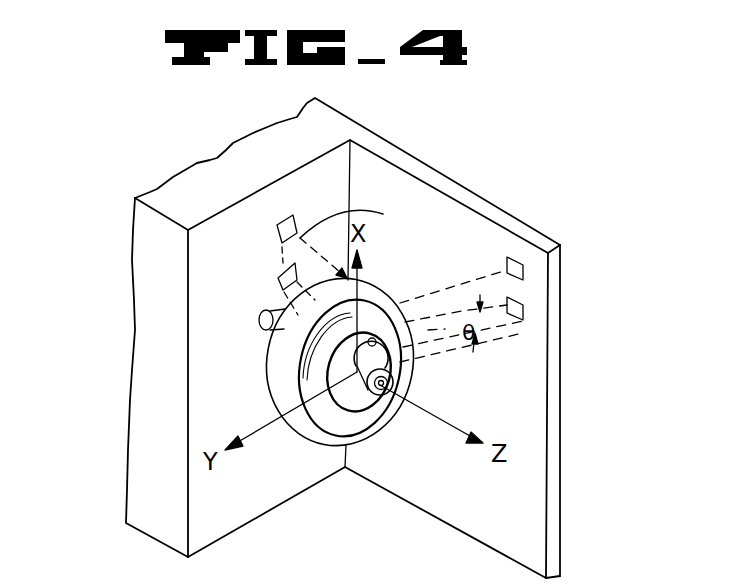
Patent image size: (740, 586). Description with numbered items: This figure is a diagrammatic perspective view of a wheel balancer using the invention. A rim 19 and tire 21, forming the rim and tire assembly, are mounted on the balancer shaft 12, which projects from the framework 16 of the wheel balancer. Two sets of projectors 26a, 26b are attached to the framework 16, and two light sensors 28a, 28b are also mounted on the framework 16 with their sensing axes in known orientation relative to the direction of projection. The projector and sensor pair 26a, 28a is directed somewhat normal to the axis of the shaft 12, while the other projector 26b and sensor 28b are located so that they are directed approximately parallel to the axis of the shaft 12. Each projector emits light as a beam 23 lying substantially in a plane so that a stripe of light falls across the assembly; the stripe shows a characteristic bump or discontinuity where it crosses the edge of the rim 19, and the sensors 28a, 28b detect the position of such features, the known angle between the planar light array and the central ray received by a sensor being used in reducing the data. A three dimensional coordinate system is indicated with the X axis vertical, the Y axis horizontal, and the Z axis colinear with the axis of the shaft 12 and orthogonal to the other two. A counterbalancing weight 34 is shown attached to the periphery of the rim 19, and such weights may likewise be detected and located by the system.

The shaft 12 is at (278, 333).
The framework 16 is at (132, 331).
The rim 19 is at (333, 439).
The tire 21 is at (371, 421).
The beam 23 is at (435, 293).
The projector 26a is at (524, 272).
The projector 26b is at (278, 232).
The light sensor 28a is at (524, 314).
The light sensor 28b is at (279, 284).
The counterbalancing weight 34 is at (386, 312).